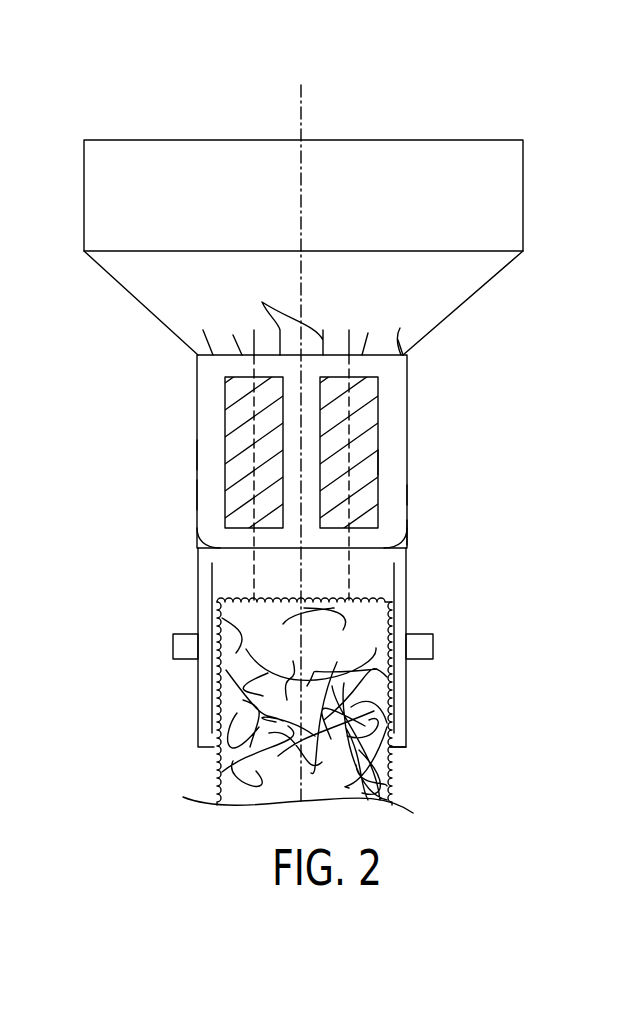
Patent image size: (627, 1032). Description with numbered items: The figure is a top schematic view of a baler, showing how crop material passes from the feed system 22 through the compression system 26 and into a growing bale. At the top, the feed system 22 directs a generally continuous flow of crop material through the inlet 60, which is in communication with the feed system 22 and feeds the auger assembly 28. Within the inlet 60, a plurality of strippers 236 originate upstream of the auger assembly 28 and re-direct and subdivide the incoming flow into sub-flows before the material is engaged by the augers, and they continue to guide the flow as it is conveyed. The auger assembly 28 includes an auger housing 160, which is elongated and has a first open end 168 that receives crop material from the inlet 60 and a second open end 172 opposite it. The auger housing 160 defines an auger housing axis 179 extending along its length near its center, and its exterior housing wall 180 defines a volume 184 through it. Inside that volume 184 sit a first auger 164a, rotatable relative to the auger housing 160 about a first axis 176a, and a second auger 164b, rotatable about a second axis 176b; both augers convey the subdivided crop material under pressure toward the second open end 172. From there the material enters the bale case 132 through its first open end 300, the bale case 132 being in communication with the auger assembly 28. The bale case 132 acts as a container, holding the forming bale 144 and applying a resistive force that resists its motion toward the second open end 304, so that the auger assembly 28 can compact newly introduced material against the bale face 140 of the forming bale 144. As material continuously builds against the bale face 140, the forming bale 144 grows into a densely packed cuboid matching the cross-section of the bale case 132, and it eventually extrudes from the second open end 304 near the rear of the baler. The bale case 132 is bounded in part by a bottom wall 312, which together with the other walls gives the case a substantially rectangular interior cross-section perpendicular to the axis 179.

The feed system 22 is at (523, 157).
The compression system 26 is at (428, 495).
The auger assembly 28 is at (407, 385).
The inlet 60 is at (473, 267).
The bale case 132 is at (407, 598).
The bale face 140 is at (350, 604).
The forming bale 144 is at (380, 785).
The auger housing 160 is at (197, 455).
The first auger 164a is at (227, 415).
The second auger 164b is at (378, 435).
The first open end 168 is at (407, 353).
The second open end 172 is at (407, 533).
The first axis 176a is at (253, 333).
The second axis 176b is at (353, 327).
The auger housing axis 179 is at (303, 90).
The exterior housing wall 180 is at (197, 495).
The volume 184 is at (398, 463).
The strippers 236 is at (206, 336).
The first open end 300 is at (217, 547).
The second open end 304 is at (400, 748).
The bottom wall 312 is at (198, 598).